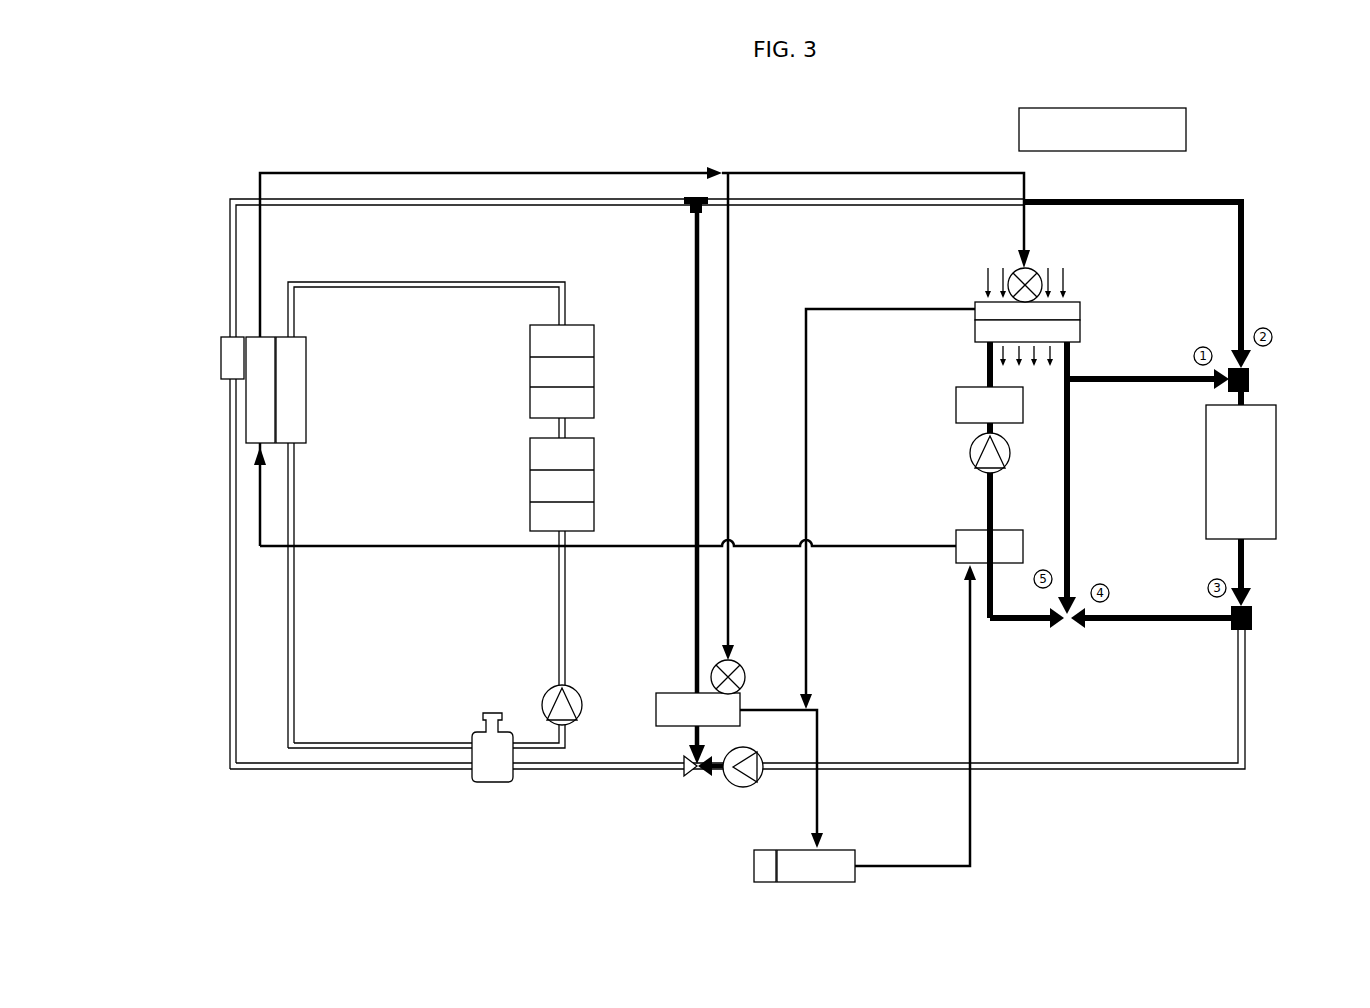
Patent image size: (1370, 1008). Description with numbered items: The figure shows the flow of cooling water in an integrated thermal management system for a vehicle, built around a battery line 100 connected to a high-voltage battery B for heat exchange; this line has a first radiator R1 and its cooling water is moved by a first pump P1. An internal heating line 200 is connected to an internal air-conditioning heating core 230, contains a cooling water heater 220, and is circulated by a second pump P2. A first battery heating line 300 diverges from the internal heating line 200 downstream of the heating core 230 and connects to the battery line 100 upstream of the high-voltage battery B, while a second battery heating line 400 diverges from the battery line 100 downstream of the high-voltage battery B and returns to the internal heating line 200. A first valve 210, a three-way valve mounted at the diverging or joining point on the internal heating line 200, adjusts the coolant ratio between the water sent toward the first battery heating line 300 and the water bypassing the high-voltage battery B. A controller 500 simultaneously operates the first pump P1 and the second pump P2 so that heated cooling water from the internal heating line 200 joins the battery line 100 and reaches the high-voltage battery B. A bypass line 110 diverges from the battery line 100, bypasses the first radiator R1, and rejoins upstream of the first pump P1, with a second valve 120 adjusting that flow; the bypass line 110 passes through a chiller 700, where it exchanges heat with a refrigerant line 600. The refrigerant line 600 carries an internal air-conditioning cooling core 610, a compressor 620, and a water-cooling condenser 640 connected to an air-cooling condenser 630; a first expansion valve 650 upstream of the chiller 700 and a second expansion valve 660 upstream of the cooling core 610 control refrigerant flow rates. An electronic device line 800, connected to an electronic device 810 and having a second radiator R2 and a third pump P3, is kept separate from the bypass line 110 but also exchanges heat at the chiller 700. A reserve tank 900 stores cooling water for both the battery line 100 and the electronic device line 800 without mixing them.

The battery line 100 is at (523, 200).
The bypass line 110 is at (690, 304).
The second valve 120 is at (683, 772).
The internal heating line 200 is at (1025, 626).
The first valve 210 is at (1063, 626).
The cooling water heater 220 is at (956, 405).
The heating core 230 is at (1082, 333).
The first battery heating line 300 is at (1147, 382).
The second battery heating line 400 is at (1170, 626).
The controller 500 is at (1186, 130).
The refrigerant line 600 is at (835, 173).
The internal air-conditioning cooling core 610 is at (1082, 311).
The compressor 620 is at (845, 848).
The air-cooling condenser 630 is at (250, 423).
The water-cooling condenser 640 is at (952, 562).
The first expansion valve 650 is at (740, 662).
The second expansion valve 660 is at (1040, 272).
The chiller 700 is at (668, 695).
The electronic device line 800 is at (433, 290).
The electronic device 810 is at (530, 450).
The reserve tank 900 is at (492, 782).
The first pump P1 is at (728, 782).
The second pump P2 is at (970, 455).
The third pump P3 is at (545, 697).
The first radiator R1 is at (221, 356).
The second radiator R2 is at (302, 405).
The high-voltage battery B is at (1268, 405).